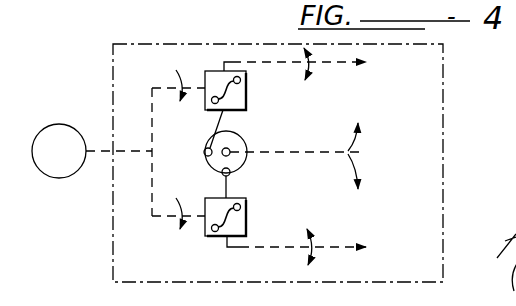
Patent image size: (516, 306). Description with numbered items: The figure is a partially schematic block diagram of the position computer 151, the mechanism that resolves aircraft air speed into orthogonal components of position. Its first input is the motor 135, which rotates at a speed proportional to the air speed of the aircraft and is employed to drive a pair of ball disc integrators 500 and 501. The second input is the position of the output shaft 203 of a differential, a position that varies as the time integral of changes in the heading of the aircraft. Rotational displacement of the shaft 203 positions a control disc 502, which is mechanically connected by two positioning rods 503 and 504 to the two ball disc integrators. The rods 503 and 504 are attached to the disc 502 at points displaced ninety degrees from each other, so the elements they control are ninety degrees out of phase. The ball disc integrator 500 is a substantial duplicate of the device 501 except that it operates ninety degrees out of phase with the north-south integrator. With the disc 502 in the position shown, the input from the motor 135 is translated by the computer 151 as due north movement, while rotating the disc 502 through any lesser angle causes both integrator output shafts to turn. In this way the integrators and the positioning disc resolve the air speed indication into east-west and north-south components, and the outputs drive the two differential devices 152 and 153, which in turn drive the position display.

The motor 135 is at (81, 103).
The position computer 151 is at (113, 236).
The ball disc integrator 500 is at (213, 238).
The ball disc integrator 501 is at (217, 71).
The control disc 502 is at (237, 133).
The positioning rod 503 is at (215, 126).
The positioning rod 504 is at (229, 185).
The output shaft 203 is at (295, 135).
The differential device 152 is at (332, 73).
The differential device 153 is at (335, 254).